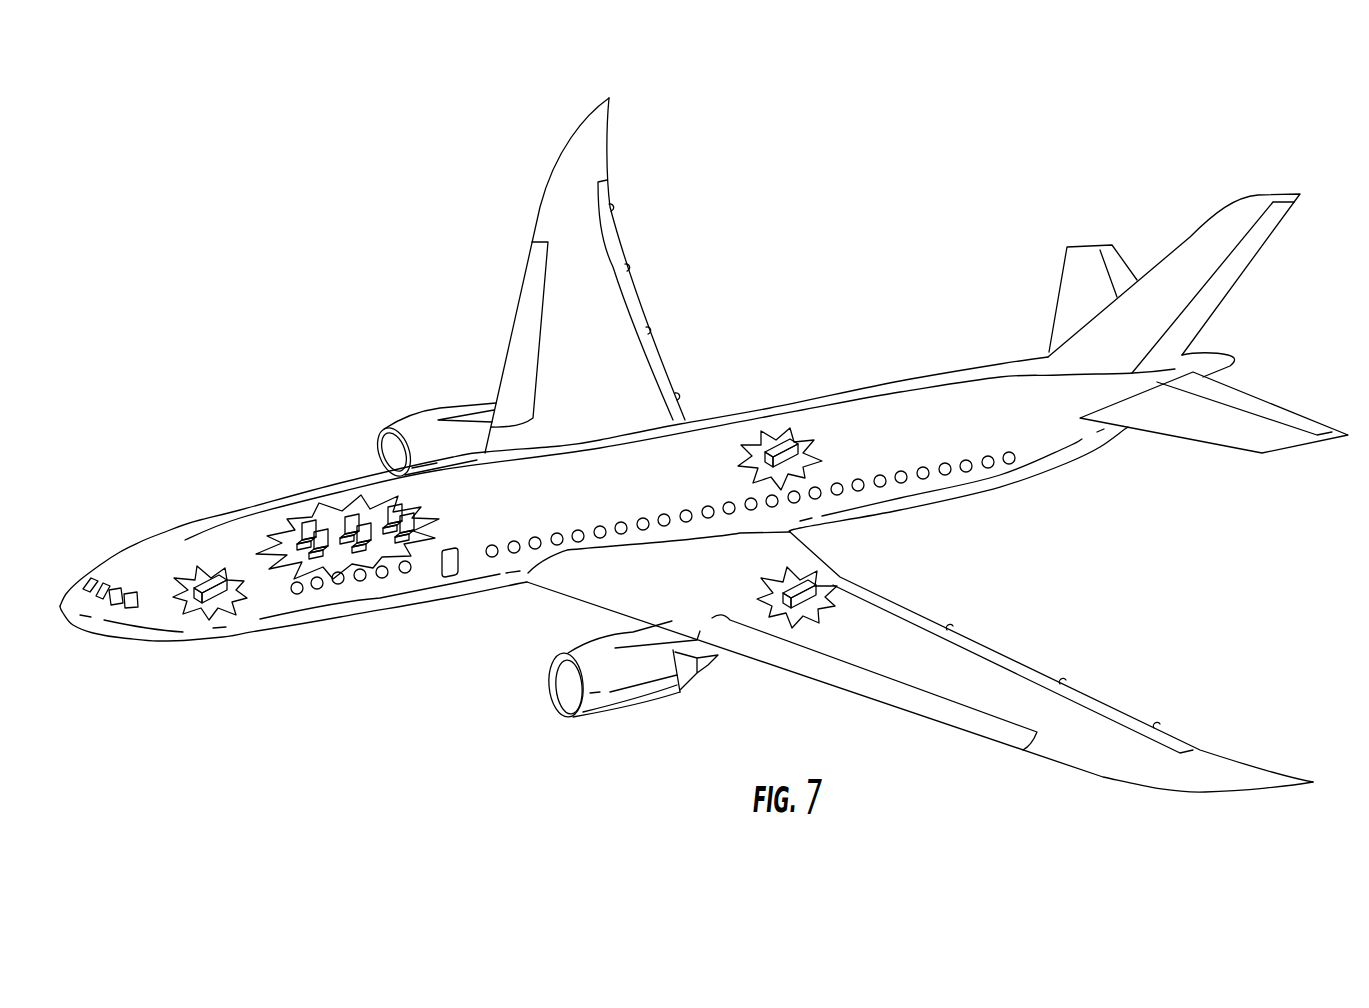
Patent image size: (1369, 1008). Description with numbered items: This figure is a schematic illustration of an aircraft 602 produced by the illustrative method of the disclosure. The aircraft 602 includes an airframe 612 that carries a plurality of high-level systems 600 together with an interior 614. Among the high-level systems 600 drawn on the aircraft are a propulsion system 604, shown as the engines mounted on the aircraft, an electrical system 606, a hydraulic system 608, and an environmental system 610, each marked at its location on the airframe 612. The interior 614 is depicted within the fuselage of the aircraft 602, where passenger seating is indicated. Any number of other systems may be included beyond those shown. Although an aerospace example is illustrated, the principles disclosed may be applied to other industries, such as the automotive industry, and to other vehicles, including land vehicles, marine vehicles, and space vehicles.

The high-level systems 600 is at (704, 445).
The aircraft 602 is at (291, 336).
The propulsion system 604 is at (425, 430).
The electrical system 606 is at (210, 588).
The hydraulic system 608 is at (803, 588).
The environmental system 610 is at (778, 447).
The airframe 612 is at (347, 524).
The interior 614 is at (333, 537).